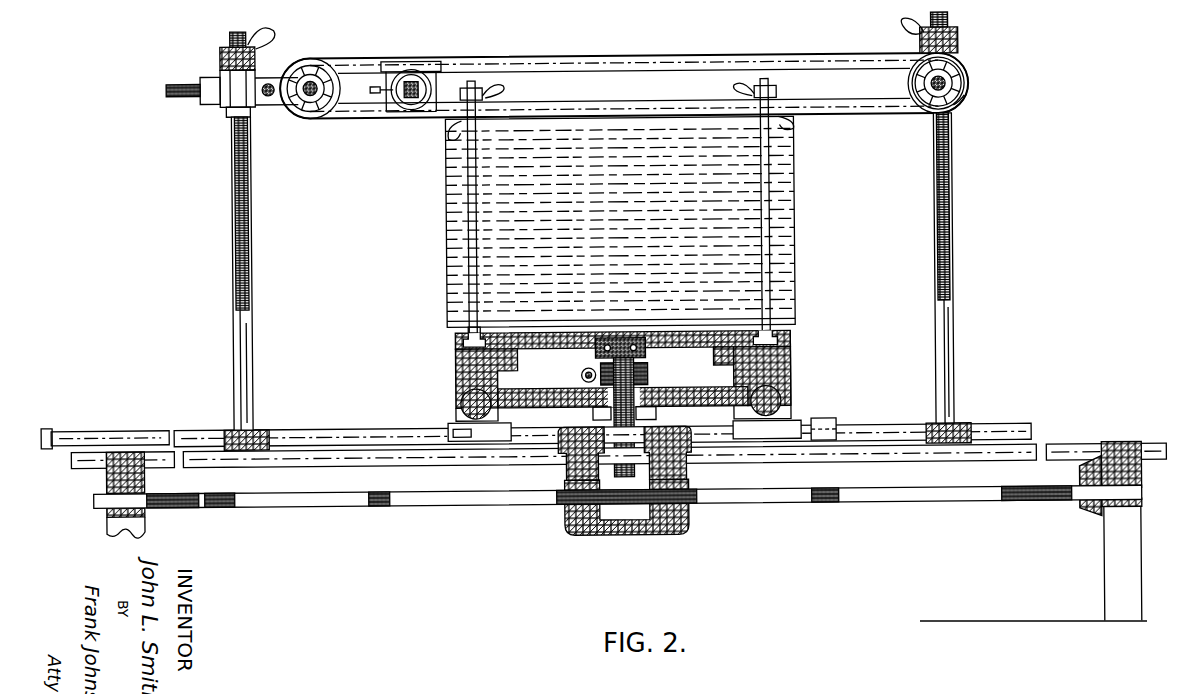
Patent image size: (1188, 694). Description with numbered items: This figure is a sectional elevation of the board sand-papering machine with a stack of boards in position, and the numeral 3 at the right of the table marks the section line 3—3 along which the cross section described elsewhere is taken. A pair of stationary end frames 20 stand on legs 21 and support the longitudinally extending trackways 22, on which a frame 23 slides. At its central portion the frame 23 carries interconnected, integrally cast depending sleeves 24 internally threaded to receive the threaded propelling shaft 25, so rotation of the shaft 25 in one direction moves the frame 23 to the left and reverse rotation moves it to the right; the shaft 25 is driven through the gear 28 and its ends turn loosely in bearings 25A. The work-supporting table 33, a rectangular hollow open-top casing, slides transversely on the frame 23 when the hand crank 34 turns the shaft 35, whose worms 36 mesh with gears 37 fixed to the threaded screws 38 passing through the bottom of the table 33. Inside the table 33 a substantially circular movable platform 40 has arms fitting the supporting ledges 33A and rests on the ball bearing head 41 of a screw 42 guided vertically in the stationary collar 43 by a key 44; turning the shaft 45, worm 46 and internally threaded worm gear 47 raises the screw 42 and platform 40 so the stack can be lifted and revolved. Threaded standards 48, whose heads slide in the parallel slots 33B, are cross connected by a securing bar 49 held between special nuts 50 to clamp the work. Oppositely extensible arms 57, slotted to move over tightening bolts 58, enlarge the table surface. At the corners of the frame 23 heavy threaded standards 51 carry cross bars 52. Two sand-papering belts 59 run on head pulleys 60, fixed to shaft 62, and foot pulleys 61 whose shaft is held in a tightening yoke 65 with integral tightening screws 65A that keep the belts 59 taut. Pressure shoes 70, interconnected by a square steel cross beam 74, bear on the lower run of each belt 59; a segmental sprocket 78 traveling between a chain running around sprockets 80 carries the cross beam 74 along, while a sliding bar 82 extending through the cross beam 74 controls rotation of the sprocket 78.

The plate 3 is at (800, 344).
The stationary end frames 20 is at (143, 478).
The legs 21 is at (143, 525).
The trackways 22 is at (200, 452).
The frame 23 is at (223, 427).
The depending sleeves 24 is at (685, 486).
The threaded propelling shaft 25 is at (887, 497).
The bearings 25A is at (106, 509).
The gear 28 is at (1085, 512).
The work-supporting table 33 is at (790, 362).
The supporting ledges 33A is at (726, 356).
The parallel slots 33B is at (442, 334).
The hand crank 34 is at (50, 424).
The shaft 35 is at (112, 427).
The worms 36 is at (446, 425).
The gears 37 is at (462, 386).
The threaded screws 38 is at (466, 404).
The movable platform 40 is at (742, 328).
The ball bearing head 41 is at (655, 358).
The screw 42 is at (683, 513).
The stationary collar 43 is at (640, 419).
The key 44 is at (604, 419).
The shaft 45 is at (582, 372).
The worm 46 is at (581, 377).
The worm gear 47 is at (641, 373).
The standards 48 is at (772, 184).
The securing bar 49 is at (592, 105).
The special nuts 50 is at (780, 124).
The heavy standard 51 is at (252, 328).
The bars 52 is at (222, 63).
The extensible arms 57 is at (637, 332).
The tightening bolt 58 is at (690, 323).
The sand papering traveling belts 59 is at (490, 59).
The head pulley 60 is at (912, 84).
The foot pulley 61 is at (330, 110).
The shaft 62 is at (962, 104).
The tightening yoke 65 is at (270, 93).
The tightening screws 65A is at (172, 90).
The pressure shoes 70 is at (452, 118).
The cross beam 74 is at (445, 67).
The sprocket wheel 78 is at (408, 66).
The sprockets 80 is at (316, 62).
The sliding bar 82 is at (380, 95).